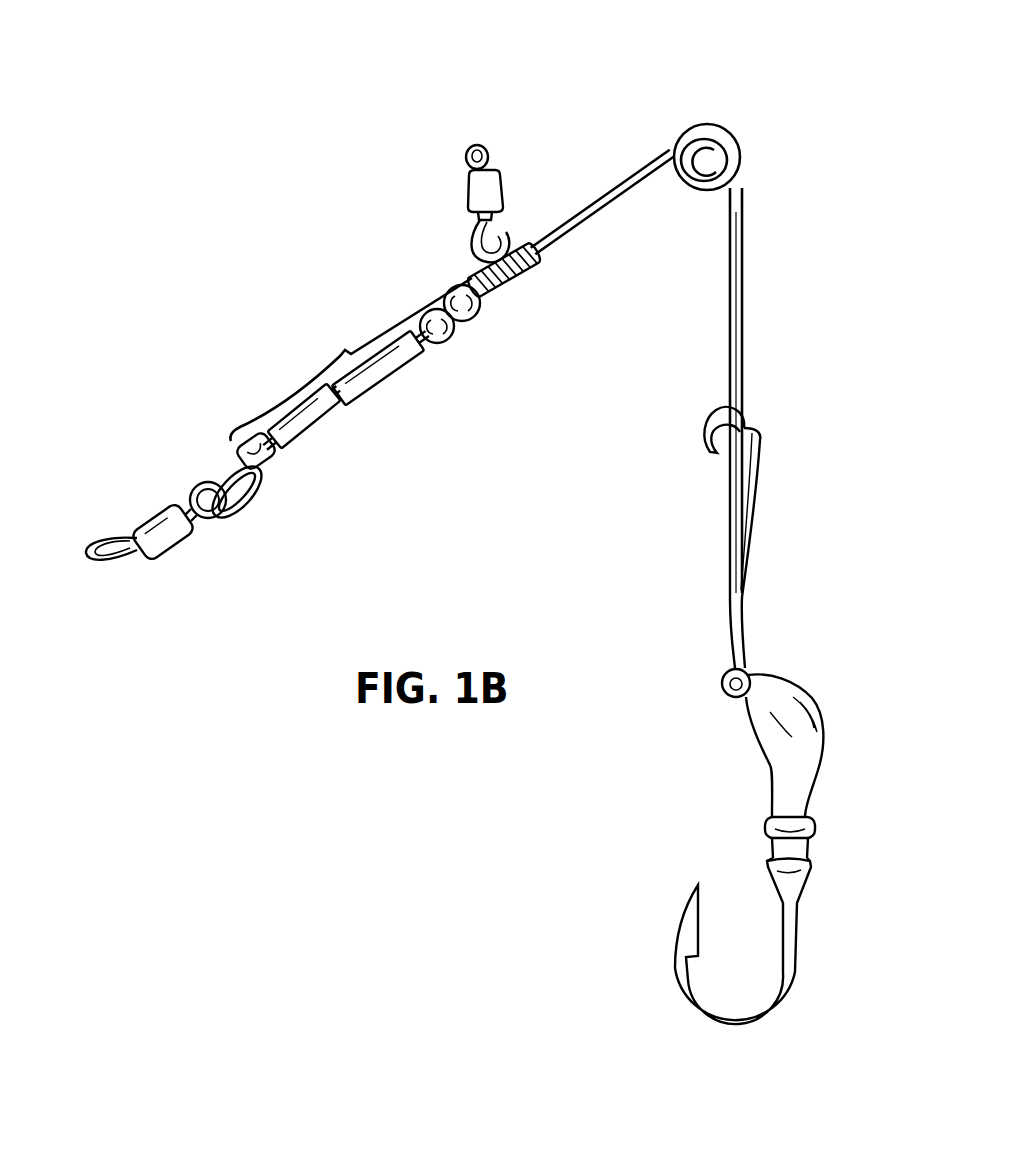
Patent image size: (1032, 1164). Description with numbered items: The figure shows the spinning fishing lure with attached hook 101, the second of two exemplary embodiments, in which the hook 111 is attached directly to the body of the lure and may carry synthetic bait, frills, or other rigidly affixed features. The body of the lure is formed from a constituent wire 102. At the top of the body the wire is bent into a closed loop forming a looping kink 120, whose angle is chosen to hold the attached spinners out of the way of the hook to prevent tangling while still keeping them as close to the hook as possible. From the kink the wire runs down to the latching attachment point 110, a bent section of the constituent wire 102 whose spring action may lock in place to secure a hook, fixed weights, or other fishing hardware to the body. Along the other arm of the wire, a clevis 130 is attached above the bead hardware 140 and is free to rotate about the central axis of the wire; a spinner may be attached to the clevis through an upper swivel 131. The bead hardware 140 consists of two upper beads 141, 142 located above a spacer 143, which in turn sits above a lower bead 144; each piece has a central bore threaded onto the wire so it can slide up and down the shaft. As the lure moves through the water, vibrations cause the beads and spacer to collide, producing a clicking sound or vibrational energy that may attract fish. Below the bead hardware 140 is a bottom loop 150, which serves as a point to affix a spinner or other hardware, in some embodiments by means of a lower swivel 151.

The spinning fishing lure with attached hook 101 is at (668, 50).
The constituent wire 102 is at (634, 196).
The latching attachment point 110 is at (762, 515).
The hook 111 is at (812, 936).
The looping kink 120 is at (722, 124).
The clevis 130 is at (512, 240).
The upper swivel 131 is at (505, 118).
The bead hardware 140 is at (357, 401).
The upper bead 141 is at (486, 318).
The upper bead 142 is at (457, 343).
The spacer 143 is at (397, 384).
The lower bead 144 is at (271, 474).
The bottom loop 150 is at (252, 517).
The lower swivel 151 is at (114, 567).